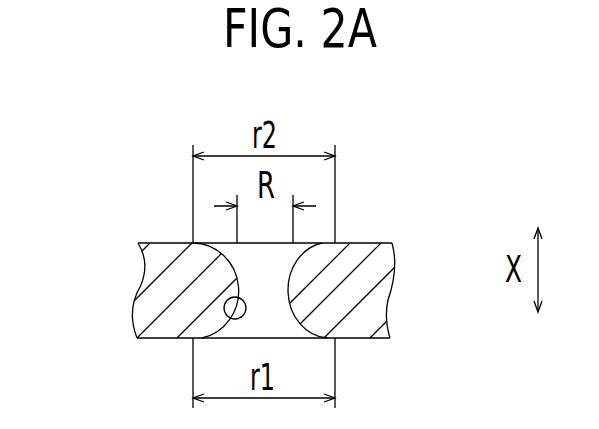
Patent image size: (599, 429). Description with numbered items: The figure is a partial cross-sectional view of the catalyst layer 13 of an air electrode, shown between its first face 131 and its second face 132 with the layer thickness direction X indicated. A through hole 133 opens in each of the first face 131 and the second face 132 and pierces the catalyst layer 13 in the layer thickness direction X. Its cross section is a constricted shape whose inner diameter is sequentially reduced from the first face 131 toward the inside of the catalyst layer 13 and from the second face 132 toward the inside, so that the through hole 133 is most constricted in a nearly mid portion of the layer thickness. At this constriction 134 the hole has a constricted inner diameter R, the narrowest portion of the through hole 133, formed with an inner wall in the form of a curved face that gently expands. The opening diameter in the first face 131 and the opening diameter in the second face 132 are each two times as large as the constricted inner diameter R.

The catalyst layer 13 is at (370, 306).
The first face 131 is at (155, 340).
The second face 132 is at (365, 241).
The through hole 133 is at (273, 320).
The constriction 134 is at (168, 279).